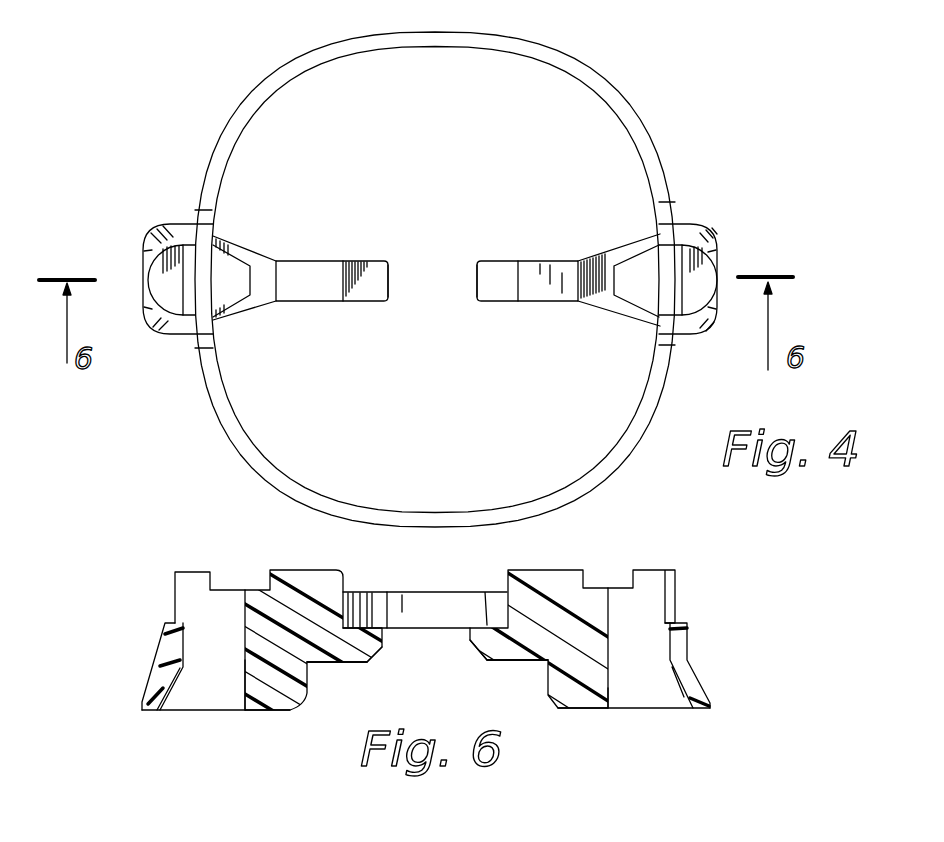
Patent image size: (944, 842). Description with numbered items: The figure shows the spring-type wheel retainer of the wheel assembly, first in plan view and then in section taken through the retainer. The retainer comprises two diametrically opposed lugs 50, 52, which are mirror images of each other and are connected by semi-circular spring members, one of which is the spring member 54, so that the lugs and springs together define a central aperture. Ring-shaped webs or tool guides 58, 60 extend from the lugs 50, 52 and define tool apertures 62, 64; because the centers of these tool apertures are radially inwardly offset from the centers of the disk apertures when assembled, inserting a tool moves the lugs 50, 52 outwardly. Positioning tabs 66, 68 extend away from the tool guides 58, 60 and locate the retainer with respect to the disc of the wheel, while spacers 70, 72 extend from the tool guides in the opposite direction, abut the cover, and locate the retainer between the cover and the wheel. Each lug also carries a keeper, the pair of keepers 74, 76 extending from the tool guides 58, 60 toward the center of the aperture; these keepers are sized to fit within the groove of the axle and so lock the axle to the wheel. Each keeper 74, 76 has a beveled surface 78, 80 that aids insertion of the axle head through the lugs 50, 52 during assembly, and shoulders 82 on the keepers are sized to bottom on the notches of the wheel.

In FIG. 4, the lug 50 is at (256, 304).
In FIG. 6, the lug 50 is at (285, 659).
In FIG. 4, the lug 52 is at (620, 293).
In FIG. 6, the lug 52 is at (587, 653).
In FIG. 4, the semi-circular spring member 54 is at (548, 50).
In FIG. 4, the tool guide 58 is at (143, 271).
In FIG. 6, the tool guide 58 is at (166, 655).
In FIG. 4, the tool guide 60 is at (720, 262).
In FIG. 6, the tool guide 60 is at (688, 644).
In FIG. 4, the tool aperture 62 is at (659, 272).
In FIG. 6, the tool aperture 62 is at (645, 602).
In FIG. 4, the tool aperture 64 is at (206, 274).
In FIG. 6, the tool aperture 64 is at (208, 618).
In FIG. 6, the positioning tab 66 is at (607, 688).
In FIG. 6, the positioning tab 68 is at (243, 687).
In FIG. 4, the spacer 70 is at (528, 261).
In FIG. 6, the spacer 70 is at (540, 569).
In FIG. 4, the spacer 72 is at (325, 260).
In FIG. 6, the spacer 72 is at (313, 568).
In FIG. 4, the keeper 74 is at (389, 300).
In FIG. 6, the keeper 74 is at (374, 593).
In FIG. 4, the keeper 76 is at (490, 302).
In FIG. 6, the keeper 76 is at (485, 592).
In FIG. 6, the beveled surface 78 is at (377, 663).
In FIG. 6, the beveled surface 80 is at (478, 653).
In FIG. 6, the shoulder 82 is at (331, 663).